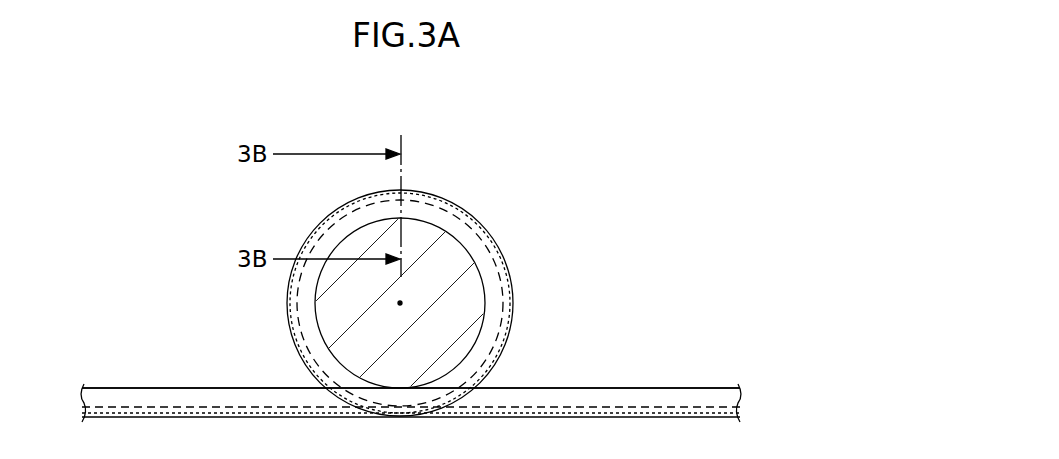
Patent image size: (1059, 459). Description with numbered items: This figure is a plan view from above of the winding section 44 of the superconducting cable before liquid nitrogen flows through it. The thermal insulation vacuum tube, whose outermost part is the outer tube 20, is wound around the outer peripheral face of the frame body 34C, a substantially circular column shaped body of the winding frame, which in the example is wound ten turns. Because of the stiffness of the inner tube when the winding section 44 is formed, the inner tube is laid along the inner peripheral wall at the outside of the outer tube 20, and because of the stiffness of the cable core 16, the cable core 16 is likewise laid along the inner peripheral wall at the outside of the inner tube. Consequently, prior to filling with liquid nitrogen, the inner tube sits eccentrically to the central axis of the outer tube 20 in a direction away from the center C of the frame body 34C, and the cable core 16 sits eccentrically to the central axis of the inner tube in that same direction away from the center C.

The cable core 16 is at (146, 407).
The outer tube 20 is at (670, 388).
The winding section 44 is at (466, 180).
The frame body 34C is at (472, 234).
The center C is at (400, 303).